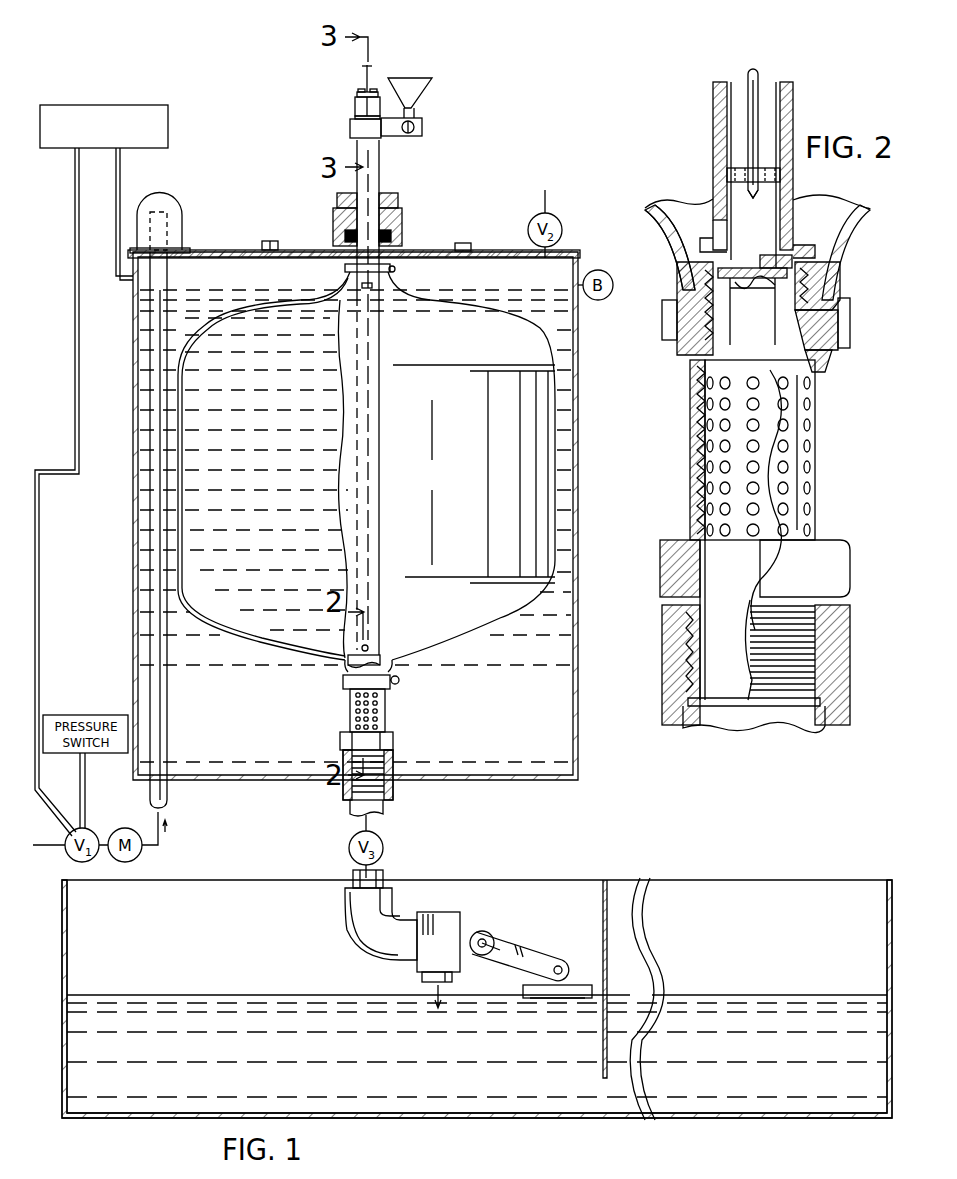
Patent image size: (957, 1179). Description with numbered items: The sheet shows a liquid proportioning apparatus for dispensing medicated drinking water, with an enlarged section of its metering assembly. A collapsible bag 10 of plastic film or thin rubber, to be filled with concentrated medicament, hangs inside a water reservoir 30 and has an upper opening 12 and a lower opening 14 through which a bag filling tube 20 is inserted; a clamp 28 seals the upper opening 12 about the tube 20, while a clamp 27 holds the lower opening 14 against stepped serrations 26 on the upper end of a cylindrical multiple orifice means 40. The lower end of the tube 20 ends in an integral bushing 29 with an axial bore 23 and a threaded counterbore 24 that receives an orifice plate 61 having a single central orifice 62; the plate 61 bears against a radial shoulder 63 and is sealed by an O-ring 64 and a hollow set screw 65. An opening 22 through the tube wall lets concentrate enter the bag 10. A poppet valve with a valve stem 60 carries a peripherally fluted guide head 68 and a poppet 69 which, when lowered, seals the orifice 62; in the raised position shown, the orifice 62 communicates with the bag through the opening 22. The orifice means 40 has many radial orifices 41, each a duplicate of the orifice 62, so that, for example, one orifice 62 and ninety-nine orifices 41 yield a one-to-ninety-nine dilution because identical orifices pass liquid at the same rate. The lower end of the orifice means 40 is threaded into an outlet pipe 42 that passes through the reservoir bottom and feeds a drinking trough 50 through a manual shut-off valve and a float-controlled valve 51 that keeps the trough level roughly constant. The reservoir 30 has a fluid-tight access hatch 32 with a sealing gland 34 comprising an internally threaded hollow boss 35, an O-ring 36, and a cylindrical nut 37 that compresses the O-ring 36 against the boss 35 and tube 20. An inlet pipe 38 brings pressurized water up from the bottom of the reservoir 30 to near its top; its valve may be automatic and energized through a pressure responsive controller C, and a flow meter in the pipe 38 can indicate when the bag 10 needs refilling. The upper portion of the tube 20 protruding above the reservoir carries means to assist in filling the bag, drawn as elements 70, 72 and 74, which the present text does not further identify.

In FIG. 1, the pressure responsive controller C is at (122, 106).
In FIG. 1, the collapsible bag 10 is at (466, 312).
In FIG. 2, the collapsible bag 10 is at (867, 229).
In FIG. 1, the upper opening 12 is at (345, 268).
In FIG. 1, the lower opening 14 is at (345, 663).
In FIG. 2, the lower opening 14 is at (665, 260).
In FIG. 1, the bag filling tube 20 is at (392, 185).
In FIG. 2, the bag filling tube 20 is at (705, 114).
In FIG. 1, the opening 22 is at (370, 645).
In FIG. 2, the opening 22 is at (710, 225).
In FIG. 2, the axial bore 23 is at (724, 246).
In FIG. 2, the threaded counterbore 24 is at (680, 336).
In FIG. 1, the stepped serrations 26 is at (382, 660).
In FIG. 2, the stepped serrations 26 is at (842, 296).
In FIG. 1, the clamp 27 is at (397, 684).
In FIG. 2, the clamp 27 is at (845, 340).
In FIG. 1, the clamp 28 is at (395, 269).
In FIG. 2, the bushing 29 is at (808, 250).
In FIG. 1, the water reservoir 30 is at (206, 252).
In FIG. 1, the access hatch 32 is at (448, 250).
In FIG. 1, the sealing gland 34 is at (381, 209).
In FIG. 1, the hollow boss 35 is at (403, 222).
In FIG. 1, the O-ring 36 is at (345, 234).
In FIG. 1, the cylindrical nut 37 is at (400, 197).
In FIG. 1, the inlet pipe 38 is at (167, 808).
In FIG. 1, the multiple orifice means 40 is at (364, 714).
In FIG. 2, the multiple orifice means 40 is at (726, 495).
In FIG. 1, the orifices 41 is at (378, 712).
In FIG. 2, the orifices 41 is at (722, 487).
In FIG. 1, the outlet pipe 42 is at (384, 806).
In FIG. 2, the outlet pipe 42 is at (662, 666).
In FIG. 1, the drinking trough 50 is at (615, 870).
In FIG. 1, the float-controlled valve 51 is at (530, 950).
In FIG. 1, the valve stem 60 is at (360, 70).
In FIG. 2, the valve stem 60 is at (760, 74).
In FIG. 2, the orifice plate 61 is at (793, 262).
In FIG. 2, the orifice 62 is at (752, 268).
In FIG. 2, the radial shoulder 63 is at (695, 290).
In FIG. 2, the O-ring 64 is at (752, 310).
In FIG. 2, the hollow set screw 65 is at (814, 366).
In FIG. 2, the peripherally fluted guide head 68 is at (745, 172).
In FIG. 2, the poppet 69 is at (762, 192).
In FIG. 1, the fitting block 70 is at (409, 141).
In FIG. 1, the screw 72 is at (423, 127).
In FIG. 1, the funnel 74 is at (415, 92).